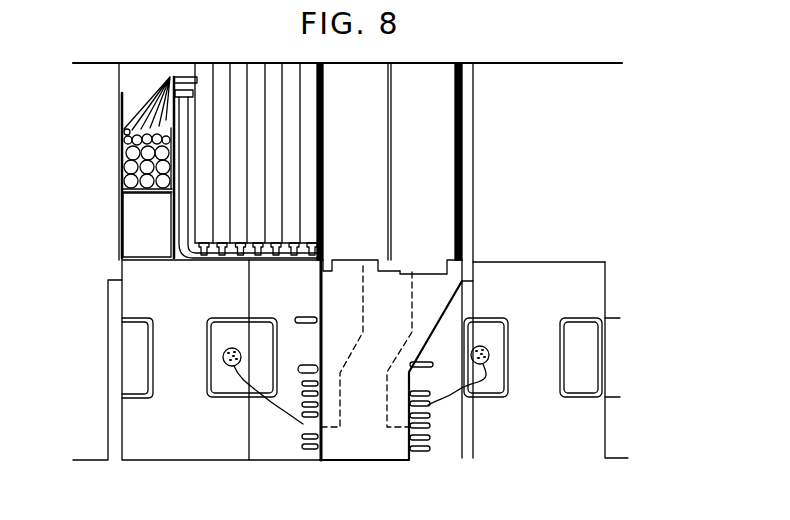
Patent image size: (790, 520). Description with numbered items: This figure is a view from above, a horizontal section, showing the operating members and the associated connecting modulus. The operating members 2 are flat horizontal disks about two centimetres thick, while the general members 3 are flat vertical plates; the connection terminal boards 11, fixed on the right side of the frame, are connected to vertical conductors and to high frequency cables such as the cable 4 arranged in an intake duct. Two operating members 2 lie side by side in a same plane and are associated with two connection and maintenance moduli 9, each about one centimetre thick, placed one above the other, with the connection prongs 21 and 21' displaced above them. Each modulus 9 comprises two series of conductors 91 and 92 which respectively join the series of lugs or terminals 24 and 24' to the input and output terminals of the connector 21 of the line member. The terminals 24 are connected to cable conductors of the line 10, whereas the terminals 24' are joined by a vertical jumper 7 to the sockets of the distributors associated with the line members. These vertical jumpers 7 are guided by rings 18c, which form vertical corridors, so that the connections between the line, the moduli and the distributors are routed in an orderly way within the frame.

The operating member 2 is at (372, 115).
The general member 3 is at (244, 83).
The cable 4 is at (148, 147).
The vertical jumper 7 is at (222, 362).
The connection and maintenance modulus 9 is at (375, 440).
The line 10 is at (492, 364).
The connection terminal board 11 is at (168, 73).
The ring 18c is at (220, 398).
The connection prong 21 is at (431, 242).
The connection prong 21' is at (361, 240).
The terminal 24 is at (437, 426).
The terminal 24' is at (290, 403).
The conductor 91 is at (412, 312).
The conductor 92 is at (360, 284).